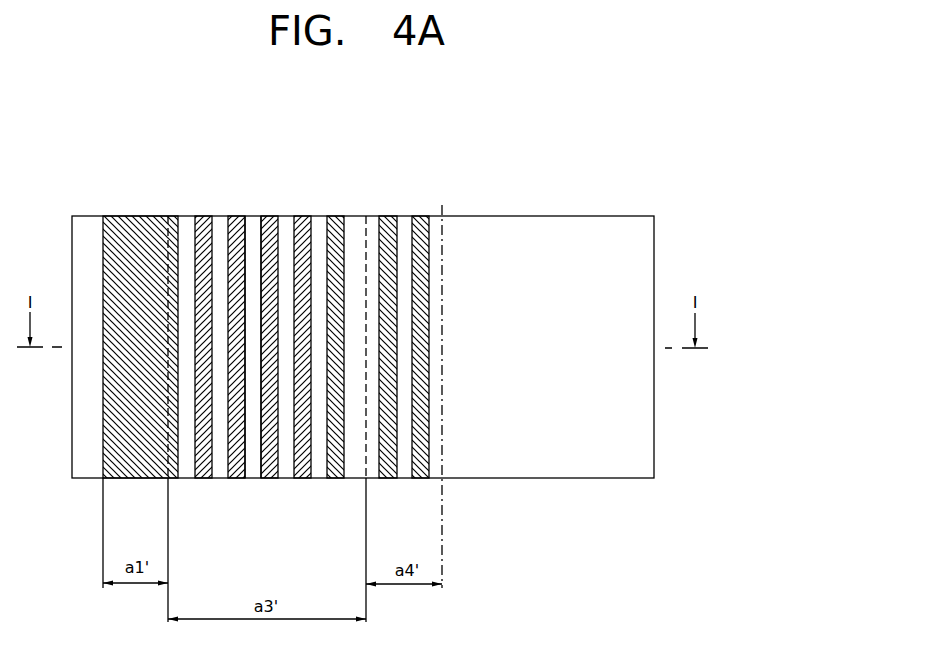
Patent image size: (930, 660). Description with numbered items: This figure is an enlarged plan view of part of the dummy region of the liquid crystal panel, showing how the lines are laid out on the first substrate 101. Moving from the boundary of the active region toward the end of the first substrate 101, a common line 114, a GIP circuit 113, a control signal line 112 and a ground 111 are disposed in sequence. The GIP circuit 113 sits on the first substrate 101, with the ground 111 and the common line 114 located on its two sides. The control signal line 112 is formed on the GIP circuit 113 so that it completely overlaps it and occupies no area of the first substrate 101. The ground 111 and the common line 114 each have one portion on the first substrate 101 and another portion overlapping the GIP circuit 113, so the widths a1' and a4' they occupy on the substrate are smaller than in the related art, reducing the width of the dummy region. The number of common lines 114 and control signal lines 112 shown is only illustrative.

The first substrate 101 is at (664, 206).
The ground 111 is at (137, 473).
The control signal line 112 is at (310, 208).
The GIP circuit 113 is at (252, 473).
The common line 114 is at (429, 208).